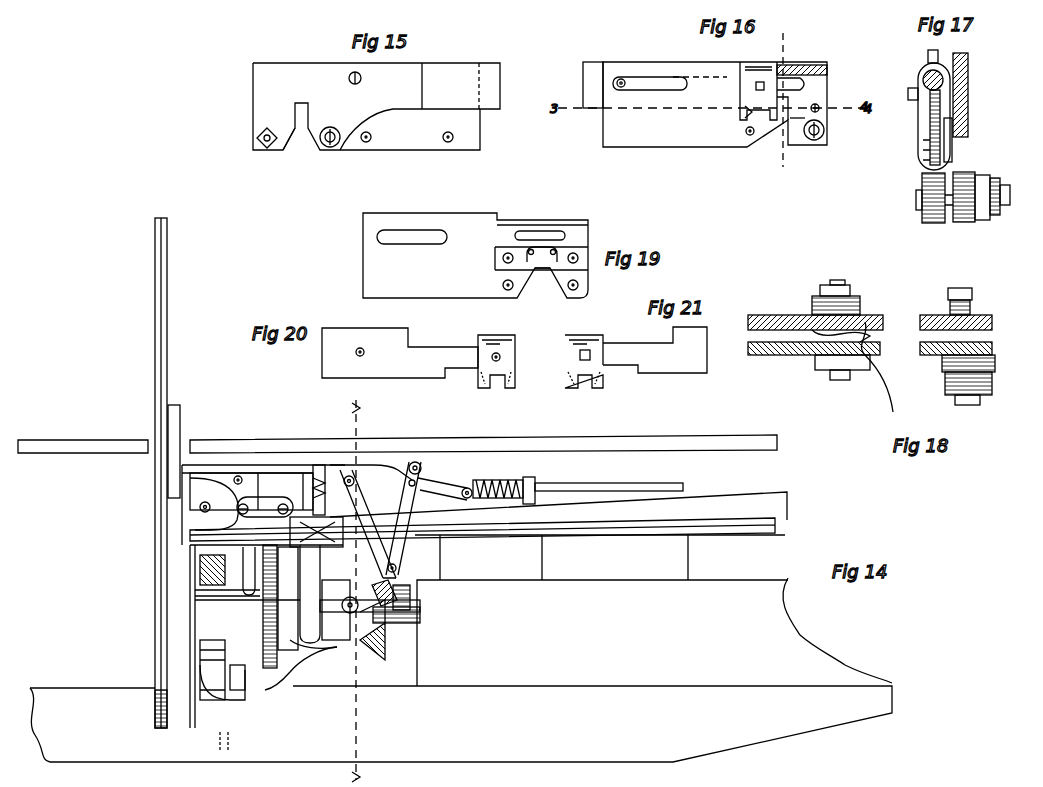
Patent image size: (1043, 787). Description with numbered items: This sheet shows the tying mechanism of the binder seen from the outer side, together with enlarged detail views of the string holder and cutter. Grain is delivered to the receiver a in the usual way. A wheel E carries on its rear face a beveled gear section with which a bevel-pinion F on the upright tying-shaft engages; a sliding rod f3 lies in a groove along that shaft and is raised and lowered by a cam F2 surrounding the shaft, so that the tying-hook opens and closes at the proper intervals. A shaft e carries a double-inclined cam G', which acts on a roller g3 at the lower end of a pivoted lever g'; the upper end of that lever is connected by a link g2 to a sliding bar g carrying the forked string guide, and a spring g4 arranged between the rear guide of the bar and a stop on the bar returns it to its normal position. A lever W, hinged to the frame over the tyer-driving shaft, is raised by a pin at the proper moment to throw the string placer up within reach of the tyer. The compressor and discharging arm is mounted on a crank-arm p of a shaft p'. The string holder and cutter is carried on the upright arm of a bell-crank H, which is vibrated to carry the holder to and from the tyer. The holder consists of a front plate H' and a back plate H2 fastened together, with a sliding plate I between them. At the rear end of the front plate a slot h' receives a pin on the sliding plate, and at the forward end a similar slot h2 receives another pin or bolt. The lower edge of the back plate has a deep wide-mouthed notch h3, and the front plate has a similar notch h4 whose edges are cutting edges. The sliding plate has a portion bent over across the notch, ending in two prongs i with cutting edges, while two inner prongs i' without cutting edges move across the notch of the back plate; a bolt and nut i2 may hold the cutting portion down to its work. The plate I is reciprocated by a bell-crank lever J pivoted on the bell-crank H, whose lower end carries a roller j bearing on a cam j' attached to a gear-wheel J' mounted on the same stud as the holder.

In FIG. 15, the back plate H2 is at (366, 106).
In FIG. 17, the back plate H2 is at (968, 100).
In FIG. 18, the back plate H2 is at (870, 314).
In FIG. 14, the back plate H2 is at (251, 501).
In FIG. 15, the sliding plate I is at (461, 86).
In FIG. 16, the sliding plate I is at (593, 85).
In FIG. 17, the sliding plate I is at (918, 70).
In FIG. 20, the sliding plate I is at (400, 353).
In FIG. 21, the sliding plate I is at (655, 350).
In FIG. 14, the sliding plate I is at (280, 491).
In FIG. 15, the notch h3 is at (294, 140).
In FIG. 17, the notch h3 is at (962, 186).
In FIG. 18, the notch h3 is at (892, 298).
In FIG. 16, the front plate H' is at (715, 104).
In FIG. 17, the front plate H' is at (911, 127).
In FIG. 19, the front plate H' is at (475, 255).
In FIG. 18, the front plate H' is at (870, 360).
In FIG. 16, the slot h2 is at (650, 79).
In FIG. 19, the slot h2 is at (412, 234).
In FIG. 16, the prongs i is at (758, 91).
In FIG. 17, the prongs i is at (914, 150).
In FIG. 20, the prongs i is at (491, 368).
In FIG. 18, the prongs i is at (857, 367).
In FIG. 16, the bolt and nut i2 is at (761, 81).
In FIG. 17, the bolt and nut i2 is at (903, 96).
In FIG. 16, the slot h' is at (813, 77).
In FIG. 19, the slot h' is at (540, 215).
In FIG. 16, the notch h4 is at (792, 138).
In FIG. 17, the notch h4 is at (930, 187).
In FIG. 19, the notch h4 is at (541, 287).
In FIG. 18, the notch h4 is at (912, 356).
In FIG. 17, the inner prongs i' is at (967, 140).
In FIG. 21, the inner prongs i' is at (579, 368).
In FIG. 18, the inner prongs i' is at (856, 336).
In FIG. 14, the crank-arm p is at (183, 451).
In FIG. 14, the receiver a is at (397, 473).
In FIG. 14, the bell-crank H is at (265, 546).
In FIG. 14, the shaft p' is at (488, 519).
In FIG. 14, the bell-crank lever J is at (368, 524).
In FIG. 14, the sliding bar g is at (371, 448).
In FIG. 14, the pivoted lever g' is at (408, 518).
In FIG. 14, the link g2 is at (442, 487).
In FIG. 14, the roller g3 is at (395, 592).
In FIG. 14, the spring g4 is at (495, 481).
In FIG. 14, the roller j is at (280, 606).
In FIG. 14, the cam j' is at (360, 594).
In FIG. 14, the double-inclined cam G' is at (417, 607).
In FIG. 14, the shaft e is at (415, 614).
In FIG. 14, the lever W is at (360, 634).
In FIG. 14, the gear-wheel J' is at (301, 665).
In FIG. 14, the bevel-pinion F is at (198, 568).
In FIG. 14, the cam F2 is at (198, 680).
In FIG. 14, the wheel E is at (240, 698).
In FIG. 14, the sliding rod f3 is at (236, 682).